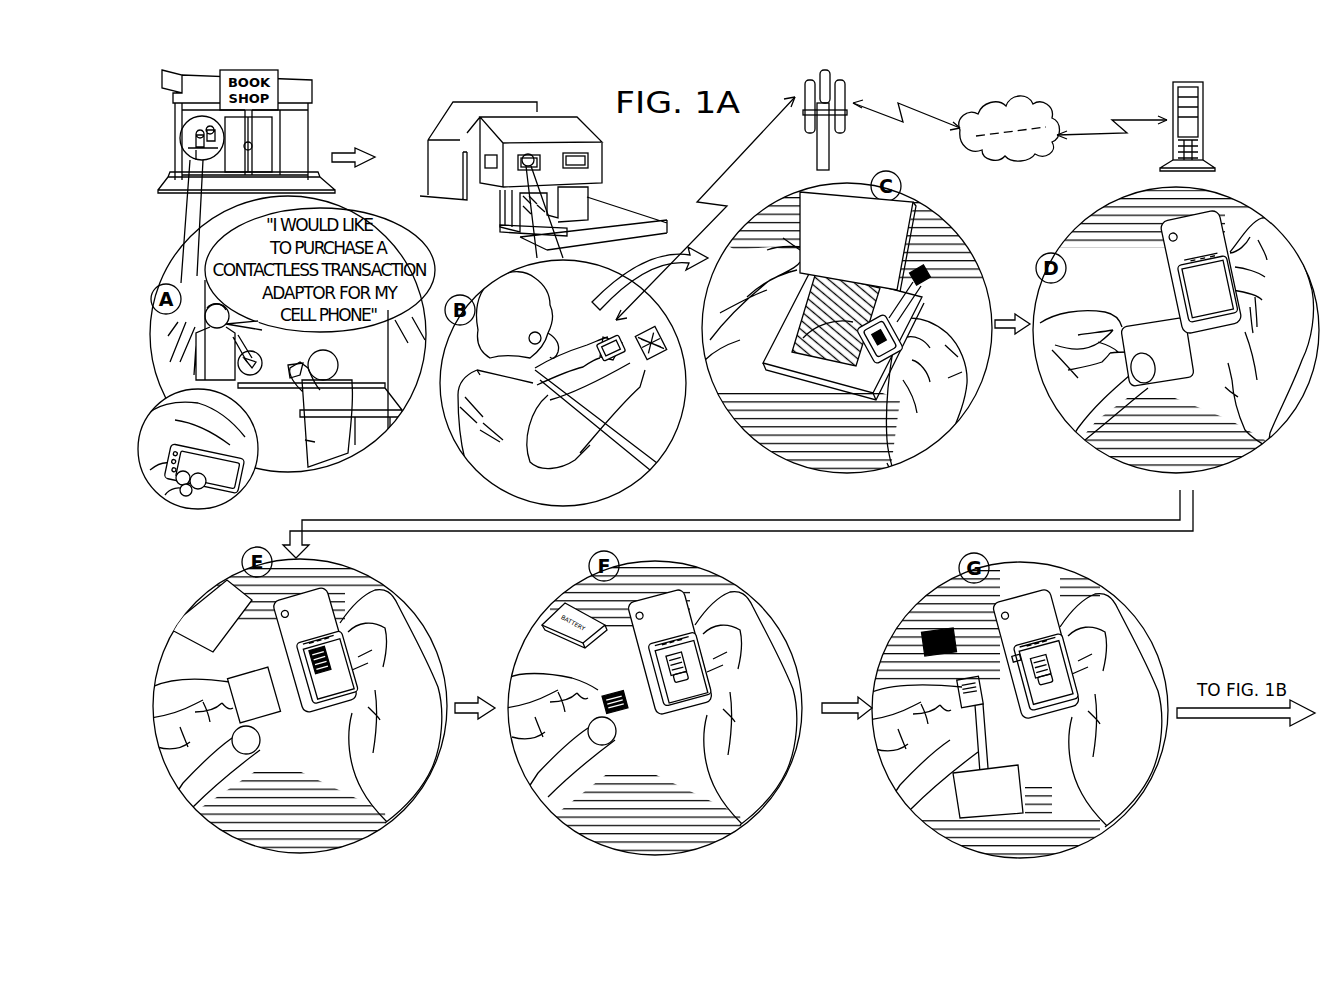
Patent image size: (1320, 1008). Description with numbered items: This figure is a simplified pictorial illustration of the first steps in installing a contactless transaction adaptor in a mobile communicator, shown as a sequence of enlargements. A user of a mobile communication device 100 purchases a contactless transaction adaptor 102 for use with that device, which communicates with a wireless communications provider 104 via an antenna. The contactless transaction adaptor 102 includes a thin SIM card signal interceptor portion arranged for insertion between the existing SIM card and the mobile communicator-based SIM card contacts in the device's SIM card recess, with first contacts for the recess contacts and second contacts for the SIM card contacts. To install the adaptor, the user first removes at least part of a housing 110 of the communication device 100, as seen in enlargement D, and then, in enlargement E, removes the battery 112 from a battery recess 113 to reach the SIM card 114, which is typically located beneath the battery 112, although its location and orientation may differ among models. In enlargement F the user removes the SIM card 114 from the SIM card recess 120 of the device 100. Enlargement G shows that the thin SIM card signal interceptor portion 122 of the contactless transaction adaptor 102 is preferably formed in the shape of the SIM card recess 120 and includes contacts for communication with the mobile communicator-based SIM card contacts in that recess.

The mobile communication device 100 is at (246, 481).
The contactless transaction adaptor 102 is at (653, 360).
The wireless communications provider 104 is at (1213, 82).
The housing 110 is at (1183, 382).
The battery 112 is at (230, 676).
The battery recess 113 is at (335, 682).
The SIM card 114 is at (323, 713).
The SIM card recess 120 is at (687, 685).
The thin SIM card signal interceptor portion 122 is at (925, 683).